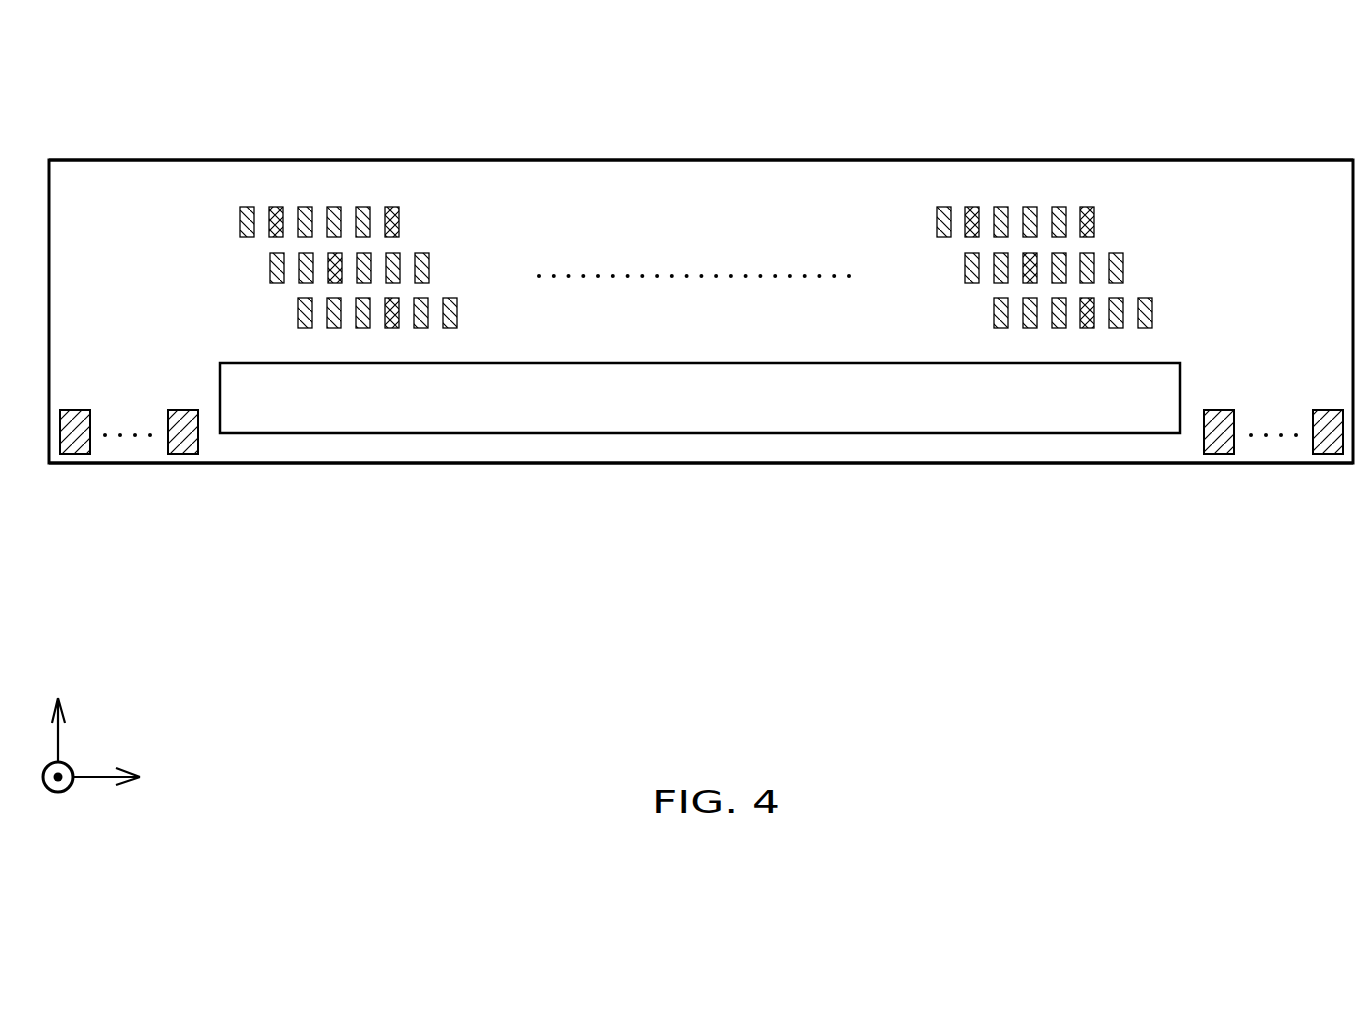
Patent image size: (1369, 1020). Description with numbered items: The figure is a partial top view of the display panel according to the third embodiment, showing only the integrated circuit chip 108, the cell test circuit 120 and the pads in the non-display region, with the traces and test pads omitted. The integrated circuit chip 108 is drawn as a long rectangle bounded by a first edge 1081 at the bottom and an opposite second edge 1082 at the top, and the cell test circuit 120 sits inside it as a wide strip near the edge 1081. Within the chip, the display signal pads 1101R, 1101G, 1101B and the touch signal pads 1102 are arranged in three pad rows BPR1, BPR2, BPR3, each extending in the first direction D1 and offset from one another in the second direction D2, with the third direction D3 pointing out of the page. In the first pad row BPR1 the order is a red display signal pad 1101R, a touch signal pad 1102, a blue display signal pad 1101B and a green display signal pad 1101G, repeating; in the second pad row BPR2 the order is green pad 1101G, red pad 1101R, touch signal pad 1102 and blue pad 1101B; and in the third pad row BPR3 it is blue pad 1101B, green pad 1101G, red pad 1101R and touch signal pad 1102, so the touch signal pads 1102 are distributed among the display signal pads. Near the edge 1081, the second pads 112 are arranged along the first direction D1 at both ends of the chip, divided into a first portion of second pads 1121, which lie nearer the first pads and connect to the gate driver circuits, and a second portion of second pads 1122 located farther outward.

The integrated circuit chip 108 is at (102, 180).
The edge of the integrated circuit chip 1081 is at (747, 464).
The edge of the integrated circuit chip 1082 is at (1278, 160).
The cell test circuit 120 is at (720, 407).
The second pads 112 is at (218, 535).
The second pads (first portion) 1121 is at (186, 448).
The second pads (second portion) 1122 is at (79, 448).
The display signal pad 1101R is at (245, 207).
The display signal pad 1101G is at (275, 253).
The display signal pad 1101B is at (303, 207).
The touch signal pad 1102 is at (277, 207).
The first pad row BPR1 is at (218, 227).
The second pad row BPR2 is at (245, 274).
The third pad row BPR3 is at (274, 319).
The first direction D1 is at (125, 778).
The second direction D2 is at (58, 713).
The third direction D3 is at (61, 795).